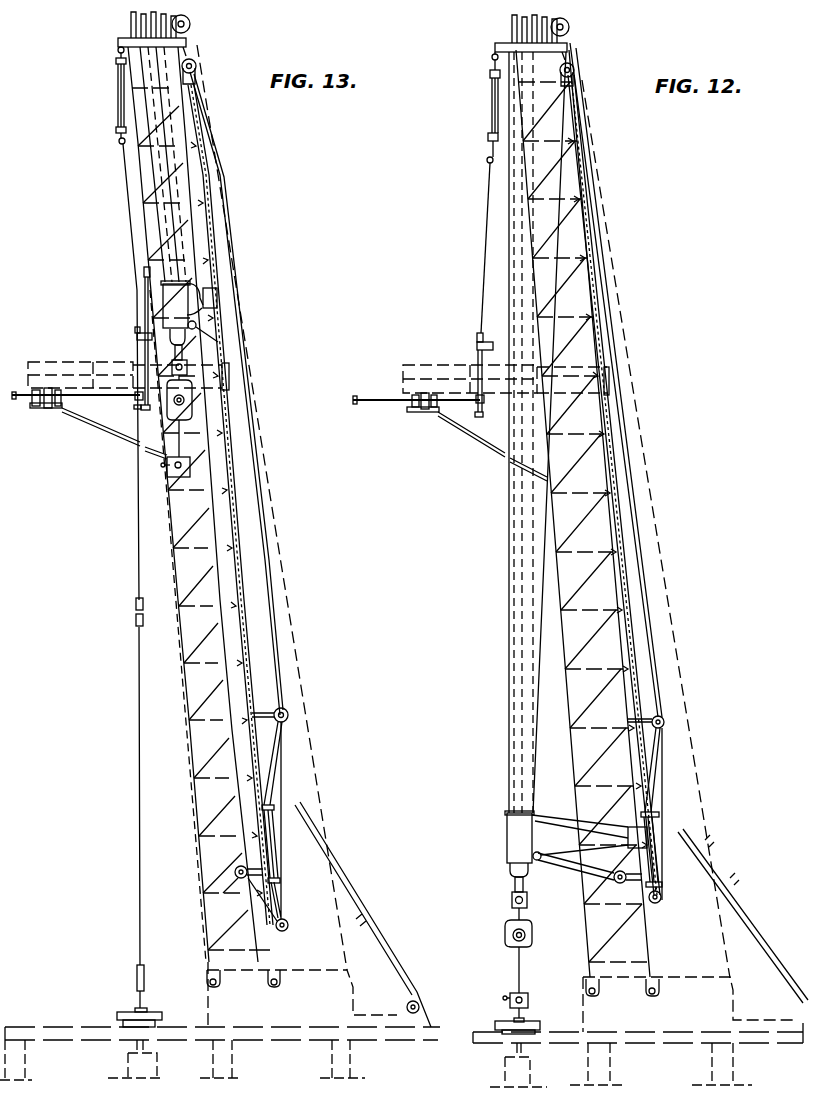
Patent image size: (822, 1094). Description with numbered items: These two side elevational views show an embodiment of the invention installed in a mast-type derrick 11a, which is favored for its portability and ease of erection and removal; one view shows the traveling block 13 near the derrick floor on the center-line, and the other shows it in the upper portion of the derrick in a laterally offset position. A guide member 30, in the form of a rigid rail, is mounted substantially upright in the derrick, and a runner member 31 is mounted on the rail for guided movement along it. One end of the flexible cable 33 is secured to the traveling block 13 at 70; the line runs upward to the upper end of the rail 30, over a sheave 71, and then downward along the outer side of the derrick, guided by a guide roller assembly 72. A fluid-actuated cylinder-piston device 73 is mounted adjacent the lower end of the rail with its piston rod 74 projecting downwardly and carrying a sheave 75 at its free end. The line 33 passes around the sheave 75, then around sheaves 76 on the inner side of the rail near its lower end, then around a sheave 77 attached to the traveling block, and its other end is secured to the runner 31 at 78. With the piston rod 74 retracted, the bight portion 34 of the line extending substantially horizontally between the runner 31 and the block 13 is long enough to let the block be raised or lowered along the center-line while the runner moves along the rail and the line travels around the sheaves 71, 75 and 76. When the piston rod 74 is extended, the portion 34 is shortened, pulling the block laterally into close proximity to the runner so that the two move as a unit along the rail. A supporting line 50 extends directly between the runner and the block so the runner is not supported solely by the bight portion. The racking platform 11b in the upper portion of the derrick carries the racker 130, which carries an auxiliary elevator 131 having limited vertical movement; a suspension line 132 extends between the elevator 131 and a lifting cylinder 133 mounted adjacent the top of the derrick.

In FIG. 13, the derrick 11a is at (186, 763).
In FIG. 12, the derrick 11a is at (582, 946).
In FIG. 13, the racking platform 11b is at (58, 362).
In FIG. 12, the racking platform 11b is at (425, 365).
In FIG. 13, the traveling block 13 is at (162, 291).
In FIG. 12, the traveling block 13 is at (507, 838).
In FIG. 13, the guide member 30 is at (205, 183).
In FIG. 12, the guide member 30 is at (592, 272).
In FIG. 13, the runner member 31 is at (217, 296).
In FIG. 12, the runner member 31 is at (647, 838).
In FIG. 13, the flexible cable 33 is at (190, 152).
In FIG. 12, the flexible cable 33 is at (593, 196).
In FIG. 12, the bight portion 34 is at (560, 856).
In FIG. 12, the supporting line 50 is at (593, 821).
In FIG. 13, the line attachment point 70 is at (226, 270).
In FIG. 12, the line attachment point 70 is at (535, 811).
In FIG. 13, the sheave 71 is at (193, 63).
In FIG. 12, the sheave 71 is at (575, 70).
In FIG. 13, the guide roller assembly 72 is at (289, 714).
In FIG. 12, the guide roller assembly 72 is at (660, 716).
In FIG. 13, the fluid-actuated cylinder-piston device 73 is at (278, 857).
In FIG. 12, the fluid-actuated cylinder-piston device 73 is at (656, 866).
In FIG. 13, the piston rod 74 is at (284, 900).
In FIG. 13, the sheave 75 is at (287, 932).
In FIG. 12, the sheave 75 is at (659, 904).
In FIG. 13, the sheaves 76 is at (254, 862).
In FIG. 12, the sheaves 76 is at (622, 884).
In FIG. 13, the sheave 77 is at (197, 323).
In FIG. 12, the sheave 77 is at (537, 852).
In FIG. 12, the line attachment point 78 is at (624, 848).
In FIG. 13, the racker 130 is at (22, 398).
In FIG. 12, the racker 130 is at (390, 398).
In FIG. 13, the auxiliary elevator 131 is at (136, 336).
In FIG. 12, the auxiliary elevator 131 is at (477, 342).
In FIG. 13, the suspension line 132 is at (128, 222).
In FIG. 12, the suspension line 132 is at (484, 250).
In FIG. 13, the lifting cylinder 133 is at (118, 100).
In FIG. 12, the lifting cylinder 133 is at (490, 104).